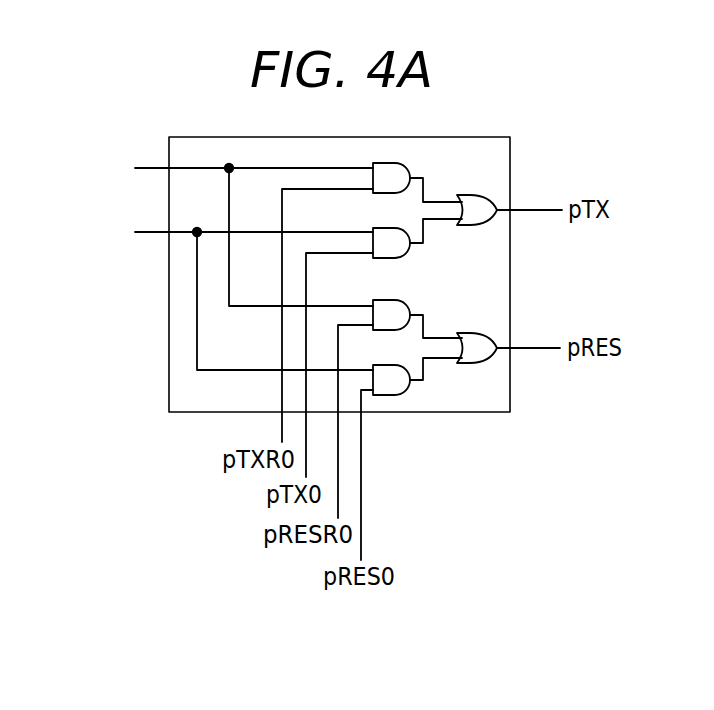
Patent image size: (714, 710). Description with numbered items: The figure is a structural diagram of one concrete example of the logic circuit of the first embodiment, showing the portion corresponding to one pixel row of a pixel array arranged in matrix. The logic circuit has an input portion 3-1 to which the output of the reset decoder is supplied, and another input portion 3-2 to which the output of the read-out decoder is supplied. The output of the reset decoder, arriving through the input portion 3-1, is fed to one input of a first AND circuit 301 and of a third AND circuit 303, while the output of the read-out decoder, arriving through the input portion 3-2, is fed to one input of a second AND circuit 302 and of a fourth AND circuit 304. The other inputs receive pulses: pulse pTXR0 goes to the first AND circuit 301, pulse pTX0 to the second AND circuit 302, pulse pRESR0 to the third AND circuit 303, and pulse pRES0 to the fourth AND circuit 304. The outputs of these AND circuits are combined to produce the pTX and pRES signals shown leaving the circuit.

The input portion 3-1 is at (231, 230).
The input portion 3-2 is at (231, 294).
The first AND circuit 301 is at (405, 162).
The second AND circuit 302 is at (400, 258).
The third AND circuit 303 is at (405, 300).
The fourth AND circuit 304 is at (400, 395).